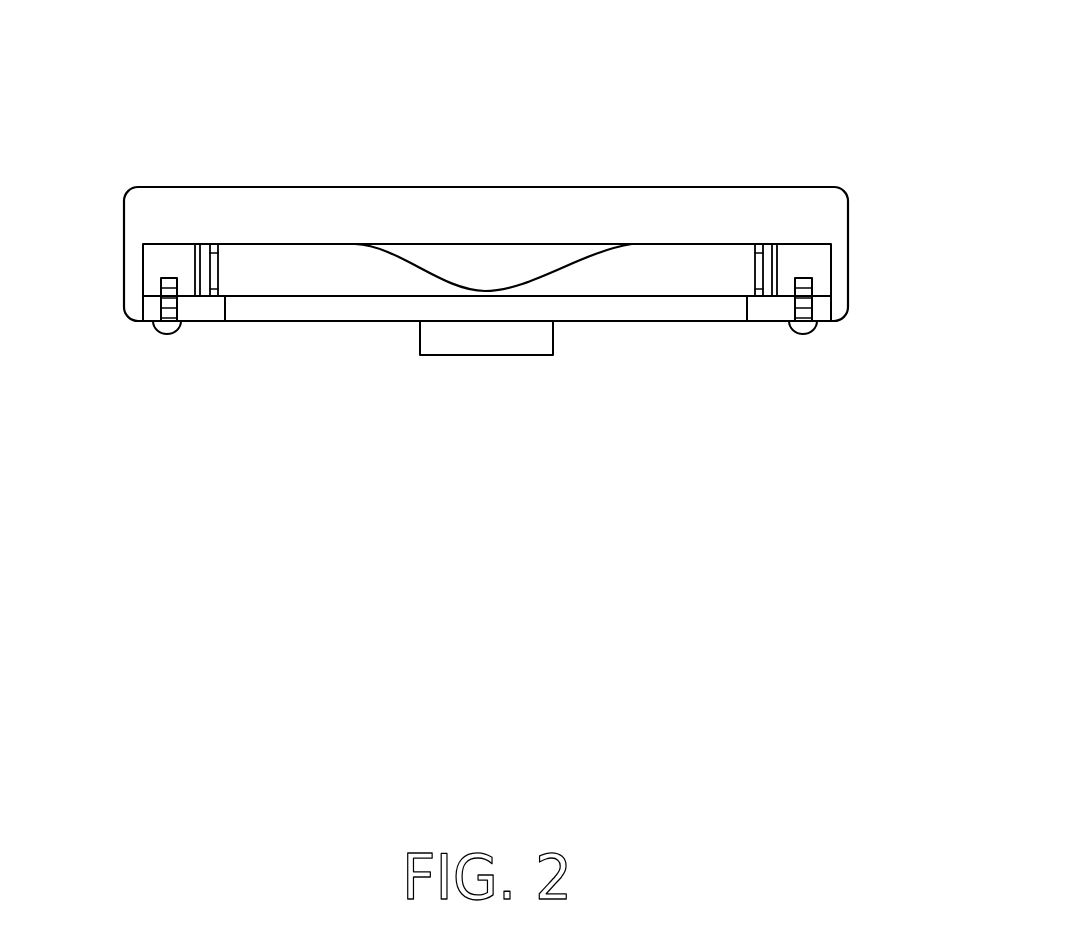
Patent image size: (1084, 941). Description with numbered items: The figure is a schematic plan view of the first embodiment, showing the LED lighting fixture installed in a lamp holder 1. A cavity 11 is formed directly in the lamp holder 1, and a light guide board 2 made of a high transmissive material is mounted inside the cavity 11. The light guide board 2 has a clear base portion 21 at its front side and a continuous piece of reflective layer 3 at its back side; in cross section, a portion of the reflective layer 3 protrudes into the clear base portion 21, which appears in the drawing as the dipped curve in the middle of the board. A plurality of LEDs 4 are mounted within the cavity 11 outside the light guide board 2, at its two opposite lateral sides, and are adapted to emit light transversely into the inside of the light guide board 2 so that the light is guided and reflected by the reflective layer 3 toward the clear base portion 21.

The lamp holder 1 is at (845, 187).
The cavity 11 is at (163, 263).
The light guide board 2 is at (330, 296).
The clear base portion 21 is at (655, 270).
The reflective layer 3 is at (438, 267).
The LEDs 4 is at (218, 275).